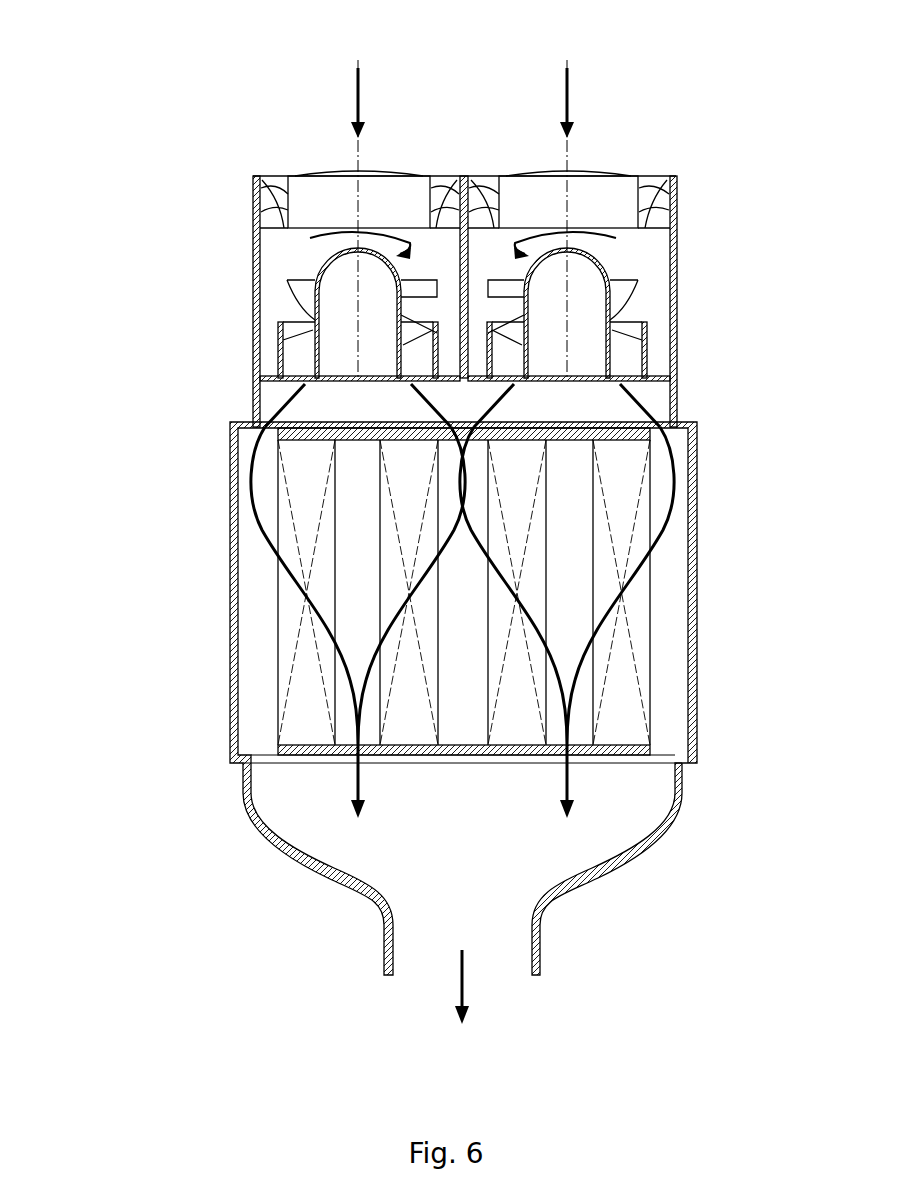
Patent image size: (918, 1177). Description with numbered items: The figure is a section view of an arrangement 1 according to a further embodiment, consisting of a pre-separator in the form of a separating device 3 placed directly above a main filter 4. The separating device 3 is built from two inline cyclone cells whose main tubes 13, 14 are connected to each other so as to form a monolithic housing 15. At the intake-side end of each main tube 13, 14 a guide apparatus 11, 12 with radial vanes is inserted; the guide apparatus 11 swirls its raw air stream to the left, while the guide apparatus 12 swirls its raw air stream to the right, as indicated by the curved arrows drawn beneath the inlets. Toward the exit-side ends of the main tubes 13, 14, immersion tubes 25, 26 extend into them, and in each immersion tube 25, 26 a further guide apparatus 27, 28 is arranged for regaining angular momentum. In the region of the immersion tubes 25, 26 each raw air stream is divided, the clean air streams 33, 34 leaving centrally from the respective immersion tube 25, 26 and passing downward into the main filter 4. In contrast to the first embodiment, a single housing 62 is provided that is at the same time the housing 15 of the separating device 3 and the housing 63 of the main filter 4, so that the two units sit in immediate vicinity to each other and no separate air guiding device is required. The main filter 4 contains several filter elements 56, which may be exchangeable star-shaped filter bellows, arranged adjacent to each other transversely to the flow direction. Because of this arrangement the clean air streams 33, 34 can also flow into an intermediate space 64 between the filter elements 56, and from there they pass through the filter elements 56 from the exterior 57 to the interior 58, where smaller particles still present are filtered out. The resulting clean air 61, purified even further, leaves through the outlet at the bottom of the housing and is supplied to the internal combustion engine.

The arrangement 1 is at (233, 137).
The separating device 3 is at (747, 422).
The main filter 4 is at (747, 975).
The guide apparatus 11 is at (599, 186).
The guide apparatus 12 is at (385, 186).
The main tube 13 is at (254, 278).
The main tube 14 is at (676, 278).
The housing 15 is at (240, 315).
The immersion tube 25 is at (644, 352).
The immersion tube 26 is at (285, 350).
The guide apparatus 27 is at (600, 268).
The guide apparatus 28 is at (327, 287).
The clean air stream 33 is at (509, 405).
The clean air stream 34 is at (300, 405).
The filter element 56 is at (623, 663).
The exterior 57 is at (662, 584).
The interior 58 is at (462, 622).
The clean air 61 is at (466, 990).
The housing 62 is at (138, 298).
The housing 63 is at (220, 592).
The intermediate space 64 is at (463, 592).